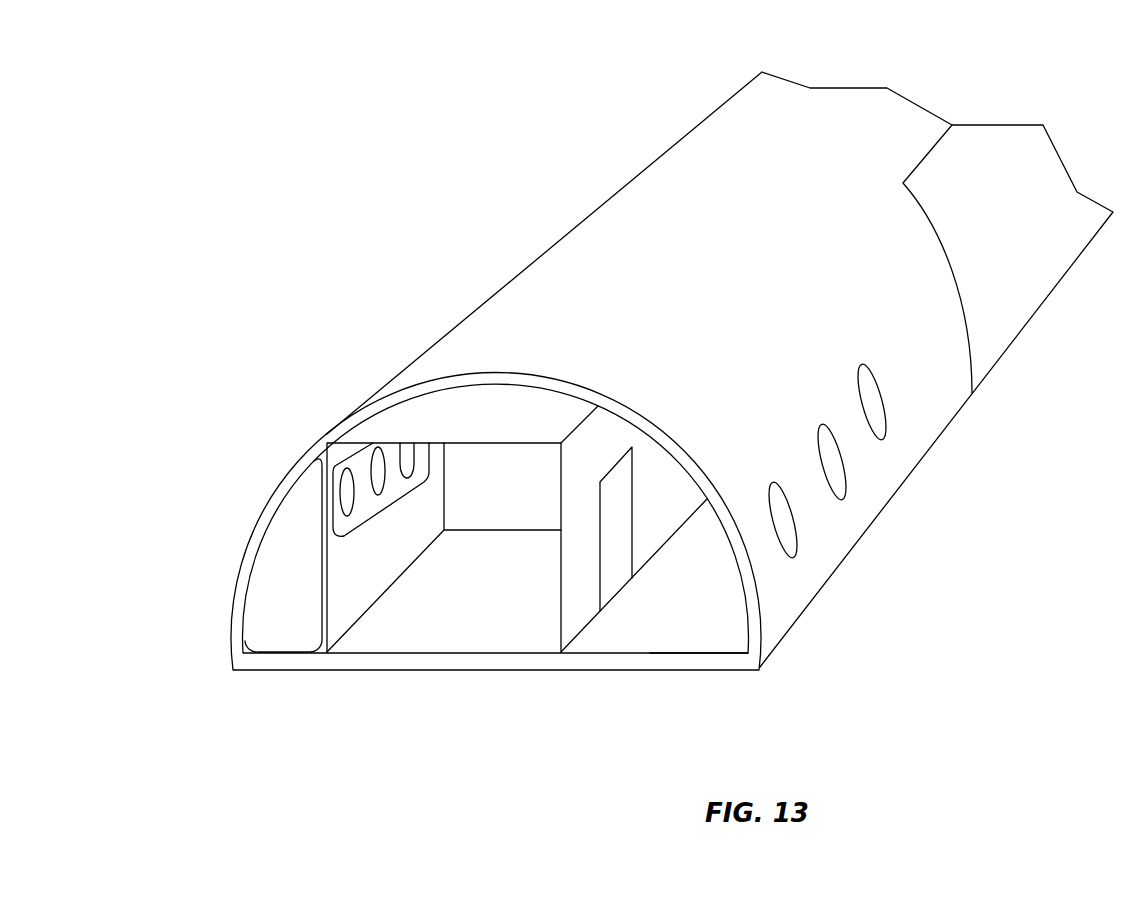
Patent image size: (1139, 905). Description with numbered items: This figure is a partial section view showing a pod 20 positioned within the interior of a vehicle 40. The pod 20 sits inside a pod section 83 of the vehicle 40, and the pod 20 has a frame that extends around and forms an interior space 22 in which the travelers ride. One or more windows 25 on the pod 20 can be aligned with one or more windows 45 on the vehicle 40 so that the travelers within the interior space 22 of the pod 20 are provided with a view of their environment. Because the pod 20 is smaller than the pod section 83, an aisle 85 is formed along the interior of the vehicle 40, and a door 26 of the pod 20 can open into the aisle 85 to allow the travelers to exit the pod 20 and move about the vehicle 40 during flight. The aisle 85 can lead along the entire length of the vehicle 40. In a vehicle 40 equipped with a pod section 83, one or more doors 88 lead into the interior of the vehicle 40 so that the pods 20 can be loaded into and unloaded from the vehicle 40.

The pod 20 is at (577, 587).
The interior space 22 is at (475, 473).
The windows 25 is at (343, 514).
The door 26 is at (612, 550).
The vehicle 40 is at (805, 137).
The windows 45 is at (798, 527).
The pod section 83 is at (693, 603).
The aisle 85 is at (713, 568).
The doors 88 is at (1008, 178).